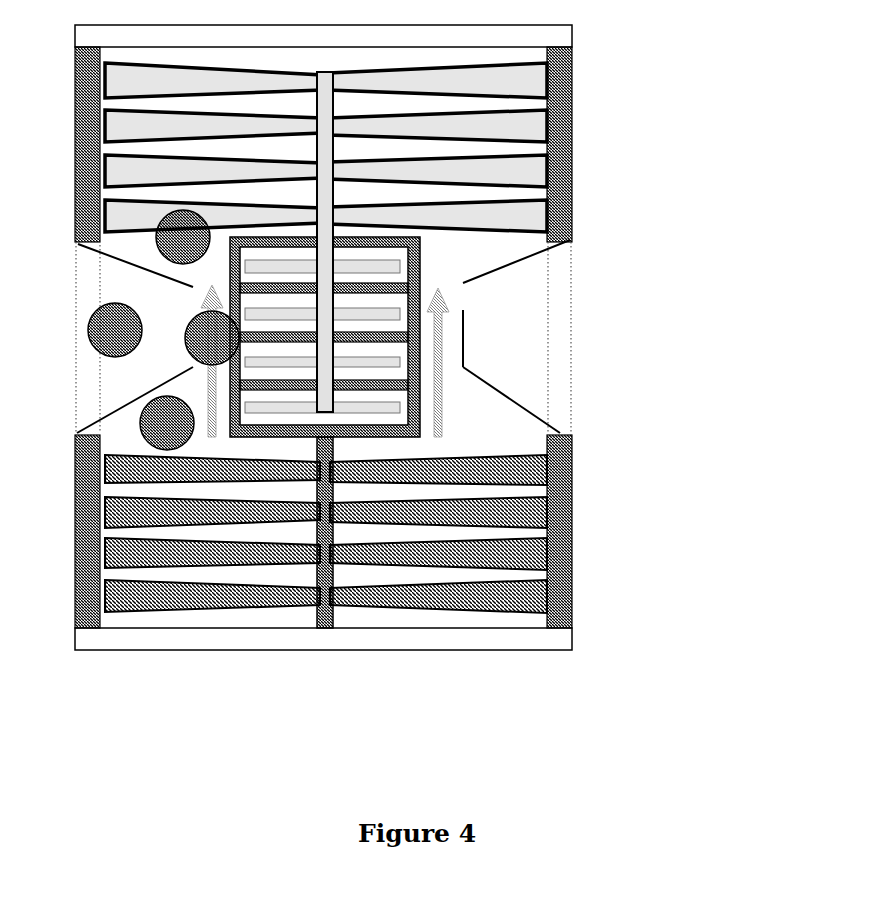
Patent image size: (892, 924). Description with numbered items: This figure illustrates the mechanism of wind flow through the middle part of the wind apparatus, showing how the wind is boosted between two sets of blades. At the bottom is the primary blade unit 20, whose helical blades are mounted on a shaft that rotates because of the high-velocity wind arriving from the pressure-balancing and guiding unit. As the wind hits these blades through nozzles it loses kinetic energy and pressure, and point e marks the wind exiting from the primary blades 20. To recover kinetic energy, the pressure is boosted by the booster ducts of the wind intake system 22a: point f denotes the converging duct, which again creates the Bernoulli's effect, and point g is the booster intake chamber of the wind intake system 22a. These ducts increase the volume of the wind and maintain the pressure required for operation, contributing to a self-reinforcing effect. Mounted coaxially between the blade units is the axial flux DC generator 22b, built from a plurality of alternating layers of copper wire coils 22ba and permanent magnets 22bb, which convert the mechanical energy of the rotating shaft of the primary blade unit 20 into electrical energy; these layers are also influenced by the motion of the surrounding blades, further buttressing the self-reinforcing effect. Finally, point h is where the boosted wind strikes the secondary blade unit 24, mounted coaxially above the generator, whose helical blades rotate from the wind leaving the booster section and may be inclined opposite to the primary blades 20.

The secondary blade unit 24 is at (522, 128).
The primary blade unit 20 is at (522, 560).
The wind intake system 22a is at (457, 322).
The axial flux DC generator 22b is at (512, 347).
The copper wire coils 22ba is at (403, 357).
The permanent magnets 22bb is at (397, 428).
The point e is at (167, 423).
The point f is at (212, 338).
The point g is at (115, 330).
The point h is at (183, 237).